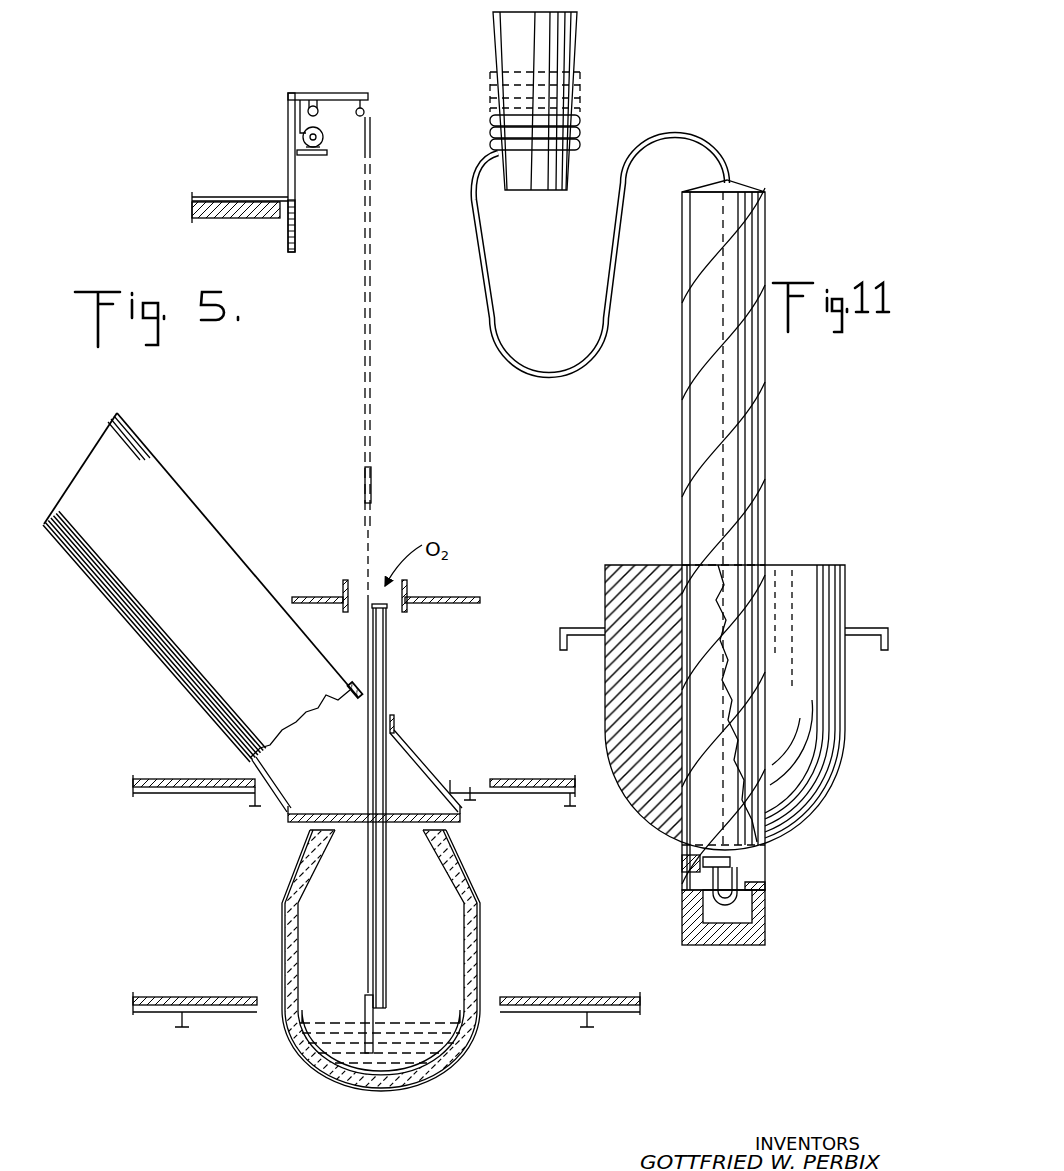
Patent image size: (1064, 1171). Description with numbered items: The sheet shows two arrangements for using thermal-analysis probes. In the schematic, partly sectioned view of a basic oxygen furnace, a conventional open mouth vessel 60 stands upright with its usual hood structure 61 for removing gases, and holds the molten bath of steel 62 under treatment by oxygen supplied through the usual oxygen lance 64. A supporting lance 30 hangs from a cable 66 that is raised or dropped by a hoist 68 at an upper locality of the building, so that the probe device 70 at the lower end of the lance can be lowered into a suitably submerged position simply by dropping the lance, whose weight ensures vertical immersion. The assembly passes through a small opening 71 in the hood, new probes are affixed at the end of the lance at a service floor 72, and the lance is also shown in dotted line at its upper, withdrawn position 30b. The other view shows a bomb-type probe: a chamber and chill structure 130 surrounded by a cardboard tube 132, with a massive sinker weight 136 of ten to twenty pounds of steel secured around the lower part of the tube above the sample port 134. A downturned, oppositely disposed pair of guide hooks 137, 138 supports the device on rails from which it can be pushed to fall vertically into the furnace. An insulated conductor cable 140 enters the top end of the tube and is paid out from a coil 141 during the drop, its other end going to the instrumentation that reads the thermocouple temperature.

In FIG. 5, the supporting lance 30 is at (370, 775).
In FIG. 5, the upper, withdrawn position of the lance 30b is at (372, 360).
In FIG. 5, the open mouth vessel 60 is at (456, 870).
In FIG. 5, the hood structure 61 is at (168, 482).
In FIG. 5, the molten bath of steel 62 is at (430, 1025).
In FIG. 5, the oxygen lance 64 is at (387, 655).
In FIG. 5, the cable 66 is at (367, 125).
In FIG. 5, the hoist 68 is at (303, 121).
In FIG. 5, the probe device 70 is at (362, 1015).
In FIG. 5, the small opening 71 is at (360, 700).
In FIG. 5, the service floor 72 is at (330, 596).
In FIG. 11, the chamber and chill structure 130 is at (722, 918).
In FIG. 11, the cardboard tube 132 is at (758, 393).
In FIG. 11, the sample port 134 is at (684, 877).
In FIG. 11, the sinker weight 136 is at (833, 702).
In FIG. 11, the guide hook 137 is at (571, 627).
In FIG. 11, the guide hook 138 is at (872, 627).
In FIG. 11, the conductor cable 140 is at (512, 357).
In FIG. 11, the coil 141 is at (565, 104).